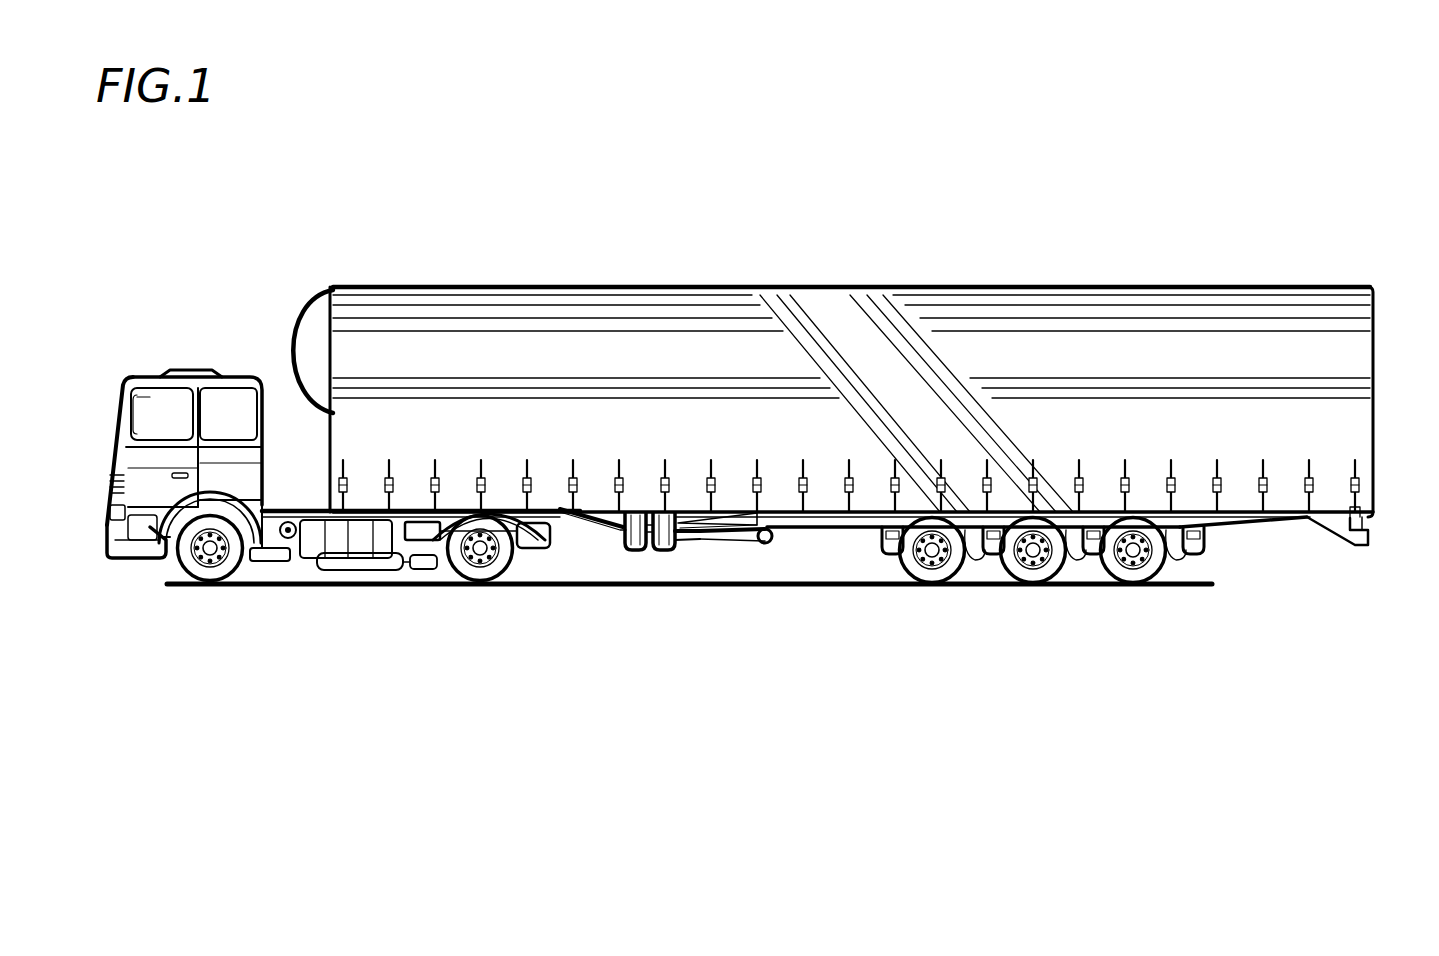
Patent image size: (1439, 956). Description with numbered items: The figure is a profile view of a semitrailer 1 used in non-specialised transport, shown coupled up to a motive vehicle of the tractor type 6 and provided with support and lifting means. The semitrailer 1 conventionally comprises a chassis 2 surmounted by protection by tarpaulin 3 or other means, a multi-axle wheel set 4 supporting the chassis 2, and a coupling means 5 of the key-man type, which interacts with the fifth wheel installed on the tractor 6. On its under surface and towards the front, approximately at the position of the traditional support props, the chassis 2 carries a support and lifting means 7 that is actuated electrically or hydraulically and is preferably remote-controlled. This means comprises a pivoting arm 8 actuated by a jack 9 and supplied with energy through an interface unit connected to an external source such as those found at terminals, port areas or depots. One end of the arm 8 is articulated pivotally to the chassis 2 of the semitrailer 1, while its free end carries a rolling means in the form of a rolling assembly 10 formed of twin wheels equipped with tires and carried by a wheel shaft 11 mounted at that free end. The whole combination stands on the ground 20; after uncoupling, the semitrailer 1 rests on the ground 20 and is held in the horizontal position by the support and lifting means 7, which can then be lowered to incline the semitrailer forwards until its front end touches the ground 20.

The semitrailer 1 is at (808, 258).
The chassis 2 is at (852, 565).
The tarpaulin 3 is at (1352, 359).
The multi-axle wheel set 4 is at (1034, 604).
The coupling means 5 is at (384, 542).
The tractor 6 is at (343, 473).
The support and lifting means 7 is at (679, 567).
The pivoting arm 8 is at (708, 542).
The jack 9 is at (741, 540).
The rolling assembly 10 is at (645, 565).
The wheel shaft 11 is at (603, 547).
The ground 20 is at (1218, 585).